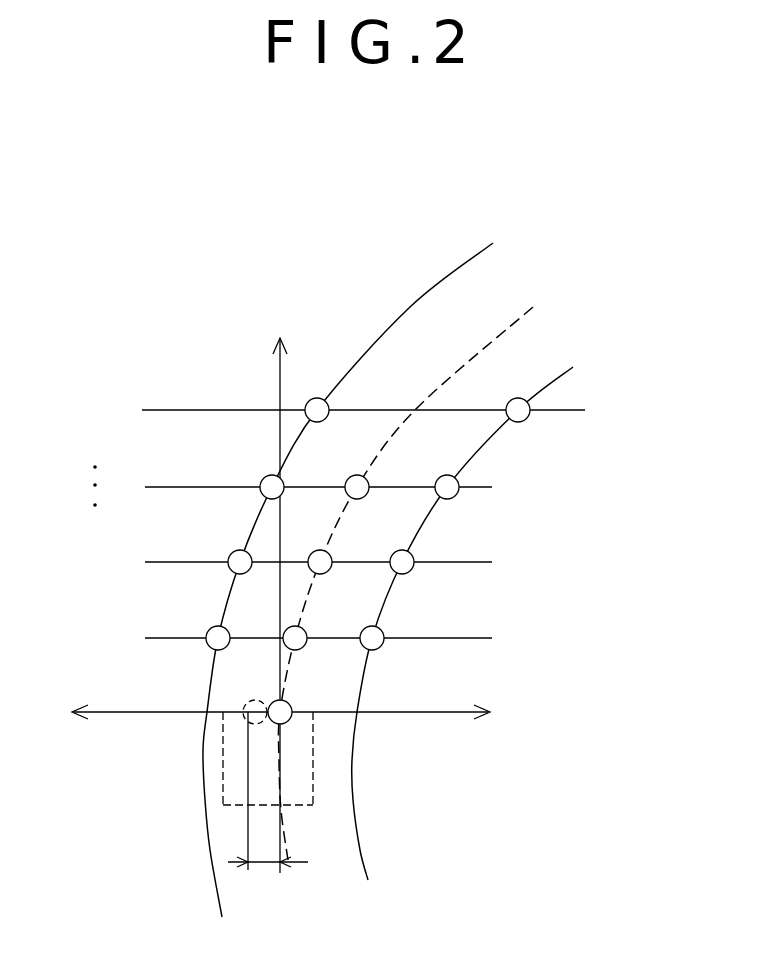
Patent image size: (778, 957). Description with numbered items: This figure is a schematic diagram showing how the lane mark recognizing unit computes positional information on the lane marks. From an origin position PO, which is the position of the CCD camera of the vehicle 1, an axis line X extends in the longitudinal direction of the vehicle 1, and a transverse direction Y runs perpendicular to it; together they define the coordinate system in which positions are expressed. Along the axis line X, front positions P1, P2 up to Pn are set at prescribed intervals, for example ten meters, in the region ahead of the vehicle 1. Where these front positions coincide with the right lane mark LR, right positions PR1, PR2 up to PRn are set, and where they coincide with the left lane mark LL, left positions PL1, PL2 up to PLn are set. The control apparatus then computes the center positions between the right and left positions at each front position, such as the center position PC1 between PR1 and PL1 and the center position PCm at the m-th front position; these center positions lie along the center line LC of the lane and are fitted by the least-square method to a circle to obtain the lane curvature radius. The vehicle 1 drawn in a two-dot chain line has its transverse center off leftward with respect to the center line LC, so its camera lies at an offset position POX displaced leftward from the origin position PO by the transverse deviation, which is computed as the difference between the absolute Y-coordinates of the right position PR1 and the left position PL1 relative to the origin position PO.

The vehicle 1 is at (223, 780).
The left lane mark LL is at (410, 307).
The center line of the lane LC is at (515, 320).
The right lane mark LR is at (568, 373).
The axis line X is at (279, 372).
The transverse direction Y is at (420, 713).
The front position Pn is at (142, 410).
The front position P2 is at (145, 562).
The front position P1 is at (145, 638).
The left position PLn is at (329, 401).
The right position PRn is at (527, 420).
The center position PCm is at (367, 477).
The left position PL2 is at (232, 549).
The right position PR2 is at (411, 556).
The left position PL1 is at (211, 627).
The center position PC1 is at (304, 628).
The right position PR1 is at (381, 631).
The origin position PO is at (289, 703).
The offset position POX is at (253, 698).